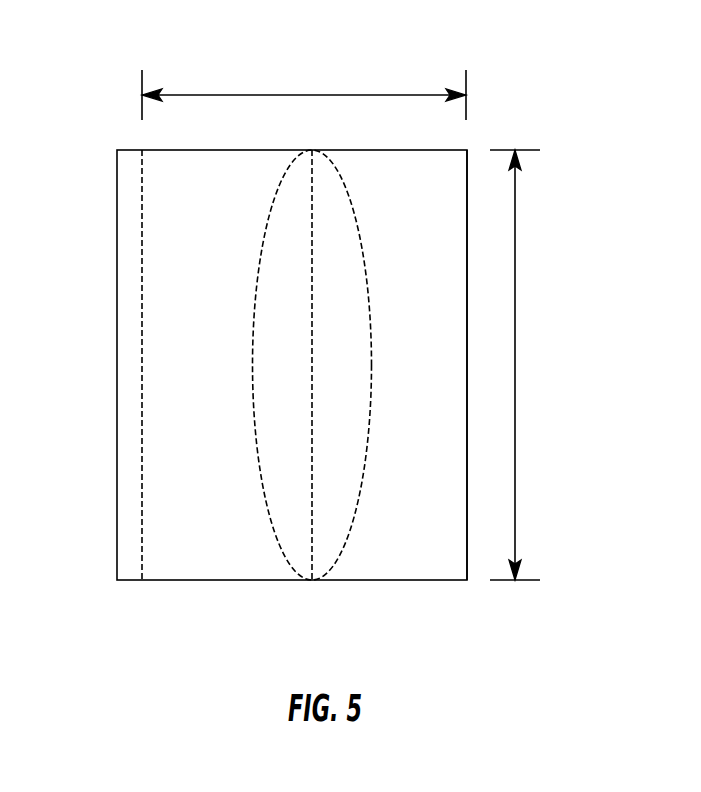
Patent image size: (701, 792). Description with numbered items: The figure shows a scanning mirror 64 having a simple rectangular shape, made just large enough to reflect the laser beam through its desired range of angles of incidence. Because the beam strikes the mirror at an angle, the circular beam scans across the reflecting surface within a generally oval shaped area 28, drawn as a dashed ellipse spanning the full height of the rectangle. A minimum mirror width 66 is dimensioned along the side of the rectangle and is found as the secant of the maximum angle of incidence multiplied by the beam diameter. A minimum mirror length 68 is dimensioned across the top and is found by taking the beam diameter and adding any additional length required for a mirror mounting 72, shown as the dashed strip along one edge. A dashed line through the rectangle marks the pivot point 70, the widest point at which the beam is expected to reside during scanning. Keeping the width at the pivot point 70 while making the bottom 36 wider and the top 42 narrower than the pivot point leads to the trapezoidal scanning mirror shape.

The oval shaped profile or area 28 is at (267, 542).
The bottom 36 is at (117, 515).
The top 42 is at (467, 497).
The mirror 64 is at (500, 105).
The minimum mirror width 66 is at (515, 310).
The minimum mirror length 68 is at (298, 95).
The pivot point 70 is at (312, 580).
The mirror mounting 72 is at (130, 437).